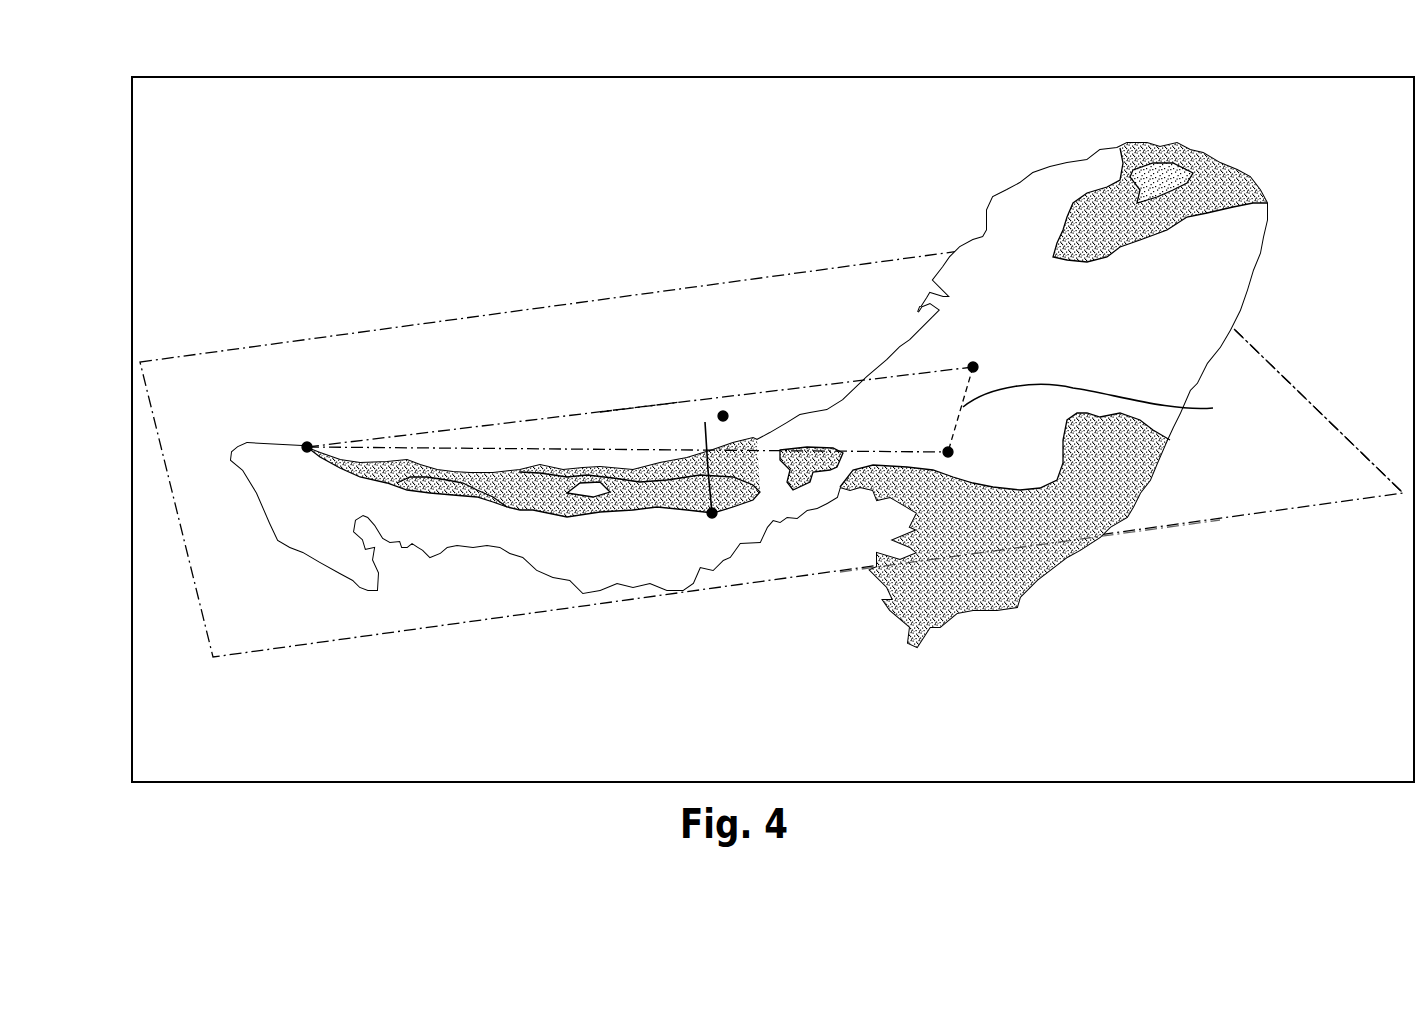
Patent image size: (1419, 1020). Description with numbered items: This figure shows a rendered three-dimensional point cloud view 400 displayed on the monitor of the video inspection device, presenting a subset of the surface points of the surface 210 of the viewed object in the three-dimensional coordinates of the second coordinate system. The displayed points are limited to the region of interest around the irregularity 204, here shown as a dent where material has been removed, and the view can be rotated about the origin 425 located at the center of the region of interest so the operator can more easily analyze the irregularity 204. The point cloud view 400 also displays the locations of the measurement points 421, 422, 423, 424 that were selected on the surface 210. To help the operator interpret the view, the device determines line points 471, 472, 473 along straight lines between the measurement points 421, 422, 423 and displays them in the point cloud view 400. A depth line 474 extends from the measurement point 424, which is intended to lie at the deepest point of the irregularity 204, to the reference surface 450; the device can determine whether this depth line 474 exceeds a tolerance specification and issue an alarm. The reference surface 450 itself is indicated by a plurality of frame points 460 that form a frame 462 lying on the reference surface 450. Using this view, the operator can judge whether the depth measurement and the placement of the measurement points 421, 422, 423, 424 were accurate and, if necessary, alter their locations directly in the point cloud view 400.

The point cloud view 400 is at (797, 77).
The surface 210 is at (1225, 170).
The irregularity 204 is at (522, 487).
The measurement point 421 is at (948, 452).
The measurement point 422 is at (307, 445).
The measurement point 423 is at (973, 367).
The measurement point 424 is at (712, 513).
The origin 425 is at (723, 416).
The reference surface 450 is at (637, 418).
The frame points 460 is at (1213, 518).
The frame 462 is at (1290, 384).
The line points 471 is at (478, 448).
The line points 472 is at (540, 414).
The line points 473 is at (1112, 403).
The depth line 474 is at (735, 455).